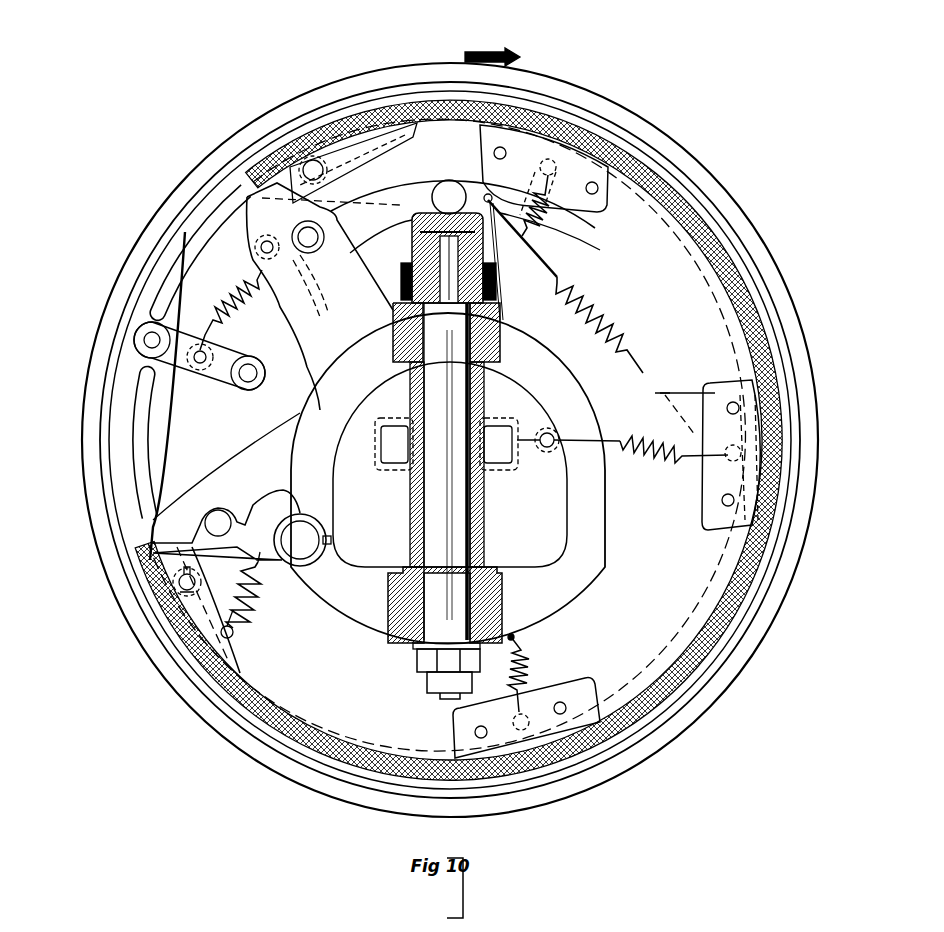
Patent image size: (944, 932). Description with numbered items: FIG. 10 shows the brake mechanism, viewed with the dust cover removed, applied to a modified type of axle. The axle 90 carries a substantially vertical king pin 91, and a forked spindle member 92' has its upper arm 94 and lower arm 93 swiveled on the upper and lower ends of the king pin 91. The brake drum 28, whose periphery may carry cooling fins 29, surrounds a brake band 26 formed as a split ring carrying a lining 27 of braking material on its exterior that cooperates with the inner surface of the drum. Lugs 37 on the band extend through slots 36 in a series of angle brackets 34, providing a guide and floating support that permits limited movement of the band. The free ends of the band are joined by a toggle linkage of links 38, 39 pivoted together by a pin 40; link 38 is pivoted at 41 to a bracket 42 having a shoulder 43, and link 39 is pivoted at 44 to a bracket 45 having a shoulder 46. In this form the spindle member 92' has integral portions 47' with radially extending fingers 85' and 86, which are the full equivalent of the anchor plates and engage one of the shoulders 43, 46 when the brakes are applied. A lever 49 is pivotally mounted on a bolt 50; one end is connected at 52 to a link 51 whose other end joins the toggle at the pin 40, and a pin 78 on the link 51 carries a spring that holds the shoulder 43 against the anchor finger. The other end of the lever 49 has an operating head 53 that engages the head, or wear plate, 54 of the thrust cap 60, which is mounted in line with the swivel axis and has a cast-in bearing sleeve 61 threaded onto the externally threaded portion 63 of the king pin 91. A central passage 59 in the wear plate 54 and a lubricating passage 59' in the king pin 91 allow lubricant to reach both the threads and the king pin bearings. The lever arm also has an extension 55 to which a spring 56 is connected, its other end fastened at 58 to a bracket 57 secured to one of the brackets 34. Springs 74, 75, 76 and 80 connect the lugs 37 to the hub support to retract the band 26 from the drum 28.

The brake band 26 is at (630, 697).
The lining 27 is at (760, 578).
The brake drum 28 is at (755, 620).
The fins 29 is at (742, 658).
The angle brackets 34 is at (600, 190).
The slots 36 is at (590, 172).
The lugs 37 is at (600, 160).
The link 38 is at (146, 450).
The link 39 is at (197, 263).
The pin 40 is at (150, 340).
The pivot 41 is at (195, 578).
The bracket 42 is at (235, 645).
The shoulder 43 is at (185, 540).
The pivot 44 is at (313, 165).
The bracket 45 is at (362, 128).
The shoulder 46 is at (277, 203).
The integral portions 47' is at (225, 396).
The lever 49 is at (385, 195).
The bolt 50 is at (312, 242).
The link 51 is at (176, 362).
The pivot 52 is at (257, 373).
The operating head 53 is at (455, 182).
The wear plate 54 is at (492, 200).
The extension 55 is at (512, 158).
The spring 56 is at (600, 318).
The bracket 57 is at (685, 395).
The connection 58 is at (662, 390).
The central passage 59 is at (502, 255).
The lubricating passage 59' is at (418, 325).
The thrust cap 60 is at (418, 236).
The bearing sleeve 61 is at (412, 252).
The externally screw threaded portion 63 is at (460, 254).
The spring 74 is at (660, 462).
The spring 75 is at (525, 672).
The spring 76 is at (255, 605).
The pin 78 is at (200, 350).
The spring 80 is at (545, 218).
The finger 85' is at (244, 522).
The finger 86 is at (271, 239).
The axle 90 is at (415, 500).
The king pin 91 is at (450, 510).
The spindle member 92' is at (463, 478).
The lower arm 93 is at (408, 633).
The upper arm 94 is at (492, 348).